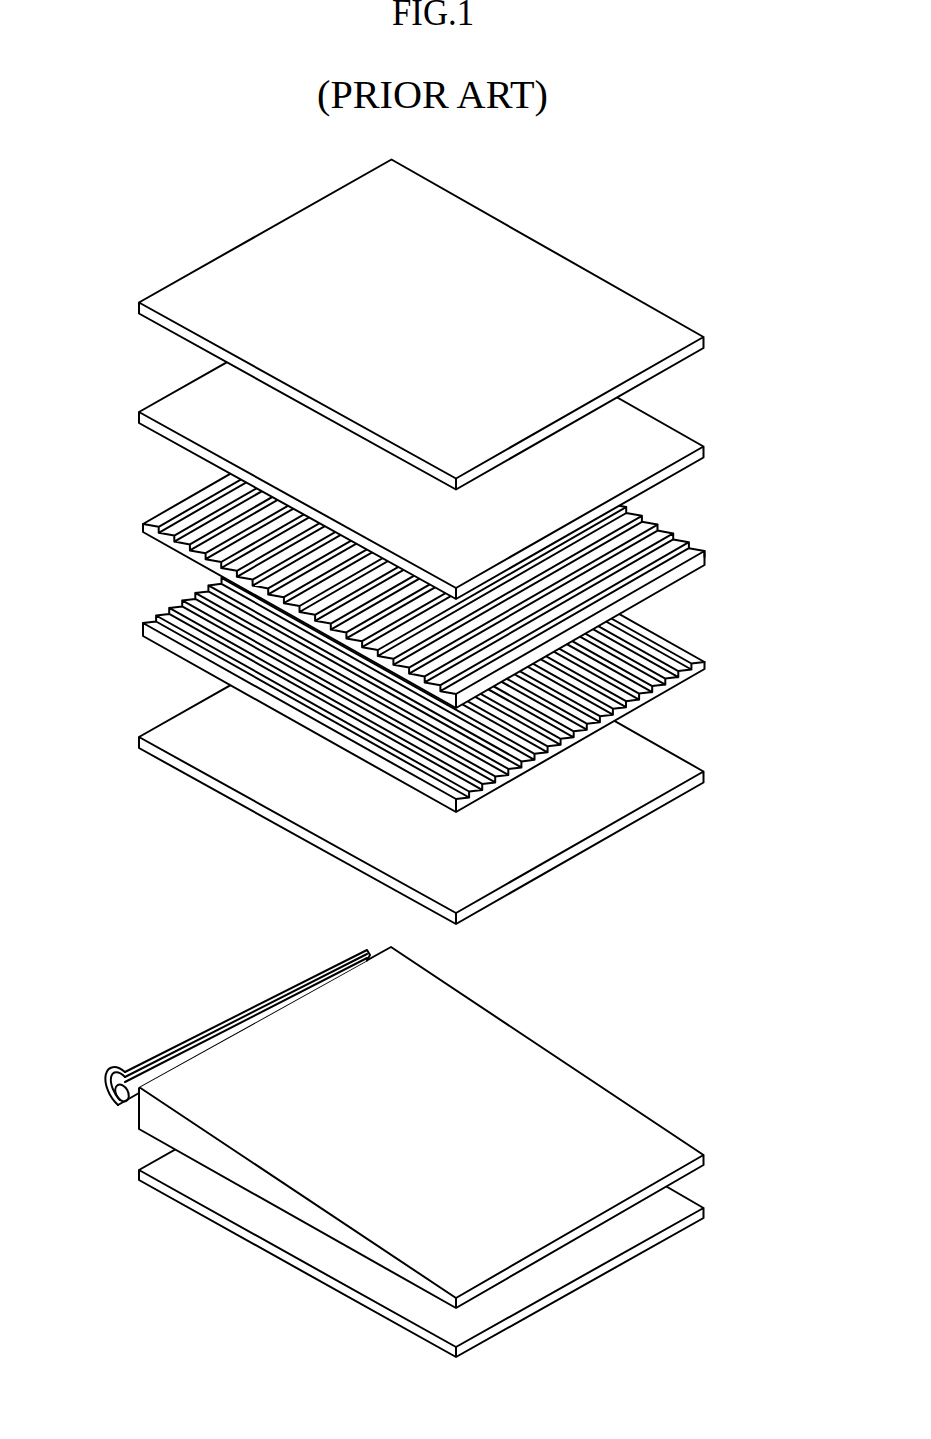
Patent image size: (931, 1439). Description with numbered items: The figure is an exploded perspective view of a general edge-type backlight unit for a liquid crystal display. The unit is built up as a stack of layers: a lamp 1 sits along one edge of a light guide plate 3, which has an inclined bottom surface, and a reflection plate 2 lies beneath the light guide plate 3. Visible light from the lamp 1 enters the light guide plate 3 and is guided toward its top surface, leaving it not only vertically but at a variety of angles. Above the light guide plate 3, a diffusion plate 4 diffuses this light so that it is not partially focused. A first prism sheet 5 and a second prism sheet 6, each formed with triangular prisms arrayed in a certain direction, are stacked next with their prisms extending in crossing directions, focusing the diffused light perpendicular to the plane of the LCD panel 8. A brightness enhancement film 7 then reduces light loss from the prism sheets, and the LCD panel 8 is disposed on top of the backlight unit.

The lamp 1 is at (116, 1106).
The reflection plate 2 is at (704, 1213).
The light guide plate 3 is at (704, 1160).
The diffusion plate 4 is at (704, 777).
The first prism sheet 5 is at (704, 666).
The second prism sheet 6 is at (704, 558).
The brightness enhancement film 7 is at (704, 452).
The LCD panel 8 is at (704, 342).